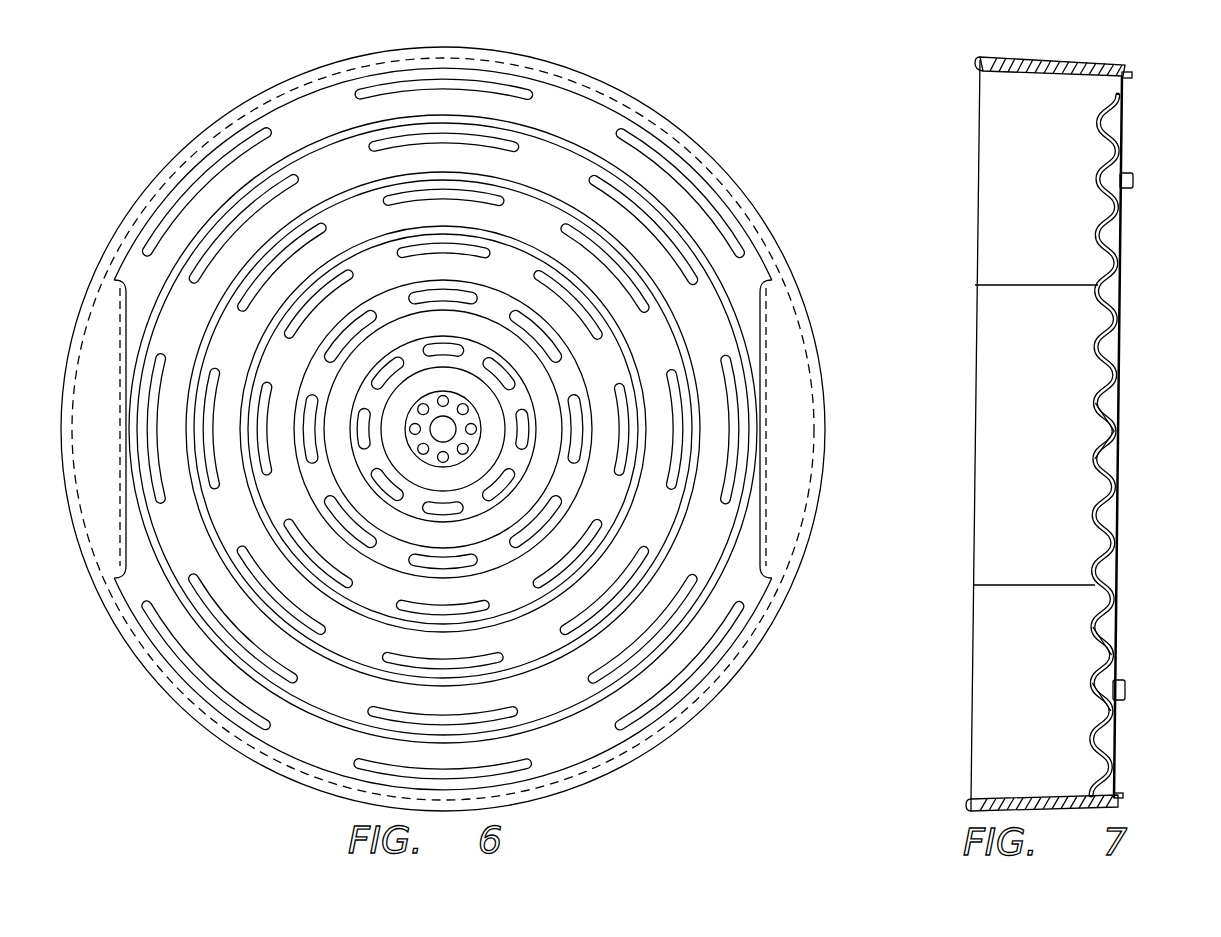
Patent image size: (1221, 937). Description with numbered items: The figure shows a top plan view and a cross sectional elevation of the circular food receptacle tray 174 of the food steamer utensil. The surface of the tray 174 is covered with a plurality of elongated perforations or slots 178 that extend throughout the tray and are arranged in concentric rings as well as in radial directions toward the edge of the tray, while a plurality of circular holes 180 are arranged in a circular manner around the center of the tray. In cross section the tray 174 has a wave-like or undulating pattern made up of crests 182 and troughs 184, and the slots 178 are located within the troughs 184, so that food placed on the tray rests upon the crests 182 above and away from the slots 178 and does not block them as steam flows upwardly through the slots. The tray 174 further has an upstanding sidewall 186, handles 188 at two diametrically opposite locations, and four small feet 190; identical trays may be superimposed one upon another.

In FIG. 6, the food receptacle tray 174 is at (692, 126).
In FIG. 7, the food receptacle tray 174 is at (963, 203).
In FIG. 6, the slots 178 is at (270, 187).
In FIG. 7, the slots 178 is at (1105, 677).
In FIG. 6, the circular holes 180 is at (464, 404).
In FIG. 7, the circular holes 180 is at (1097, 460).
In FIG. 6, the crests 182 is at (637, 690).
In FIG. 7, the crests 182 is at (1105, 651).
In FIG. 6, the troughs 184 is at (532, 717).
In FIG. 7, the troughs 184 is at (1105, 630).
In FIG. 7, the upstanding sidewall 186 is at (1042, 72).
In FIG. 6, the handles 188 is at (92, 358).
In FIG. 7, the handles 188 is at (1035, 435).
In FIG. 7, the small feet 190 is at (1133, 76).